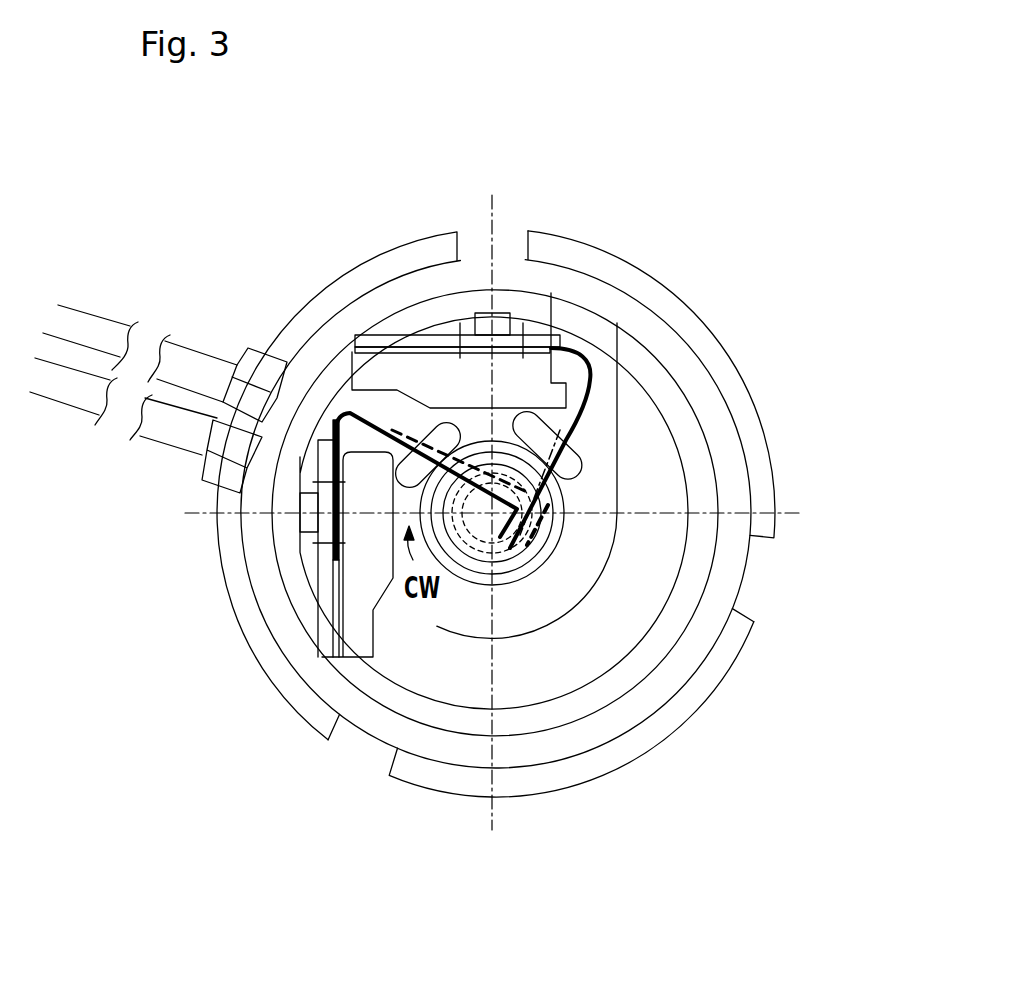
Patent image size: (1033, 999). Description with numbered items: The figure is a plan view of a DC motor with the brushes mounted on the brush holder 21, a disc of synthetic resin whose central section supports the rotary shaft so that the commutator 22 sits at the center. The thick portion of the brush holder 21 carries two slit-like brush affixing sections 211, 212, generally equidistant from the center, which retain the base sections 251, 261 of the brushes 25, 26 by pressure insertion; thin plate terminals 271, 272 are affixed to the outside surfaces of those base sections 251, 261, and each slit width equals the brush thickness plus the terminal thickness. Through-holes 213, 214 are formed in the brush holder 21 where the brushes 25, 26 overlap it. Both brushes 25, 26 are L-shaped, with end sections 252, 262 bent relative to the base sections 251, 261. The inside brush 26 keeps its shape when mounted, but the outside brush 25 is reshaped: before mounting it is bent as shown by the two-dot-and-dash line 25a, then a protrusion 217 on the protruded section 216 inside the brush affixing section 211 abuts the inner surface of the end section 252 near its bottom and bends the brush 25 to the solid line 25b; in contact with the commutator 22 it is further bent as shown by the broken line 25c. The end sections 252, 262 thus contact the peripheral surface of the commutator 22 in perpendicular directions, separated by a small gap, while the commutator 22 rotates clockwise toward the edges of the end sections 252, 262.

The brush holder 21 is at (721, 338).
The brush affixing section 211 is at (518, 330).
The brush affixing section 212 is at (319, 540).
The through-hole 213 is at (567, 463).
The through-hole 214 is at (336, 605).
The protruded section 216 is at (562, 392).
The protrusion 217 is at (483, 360).
The commutator 22 is at (513, 570).
The brush 25 is at (535, 342).
The base section 251 is at (468, 337).
The end section 252 is at (510, 538).
The two-dot-and-dash line 25a is at (503, 545).
The solid line 25b is at (494, 558).
The broken line 25c is at (520, 553).
The brush 26 is at (325, 437).
The base section 261 is at (325, 557).
The end section 262 is at (400, 490).
The terminal 271 is at (353, 388).
The terminal 272 is at (333, 572).